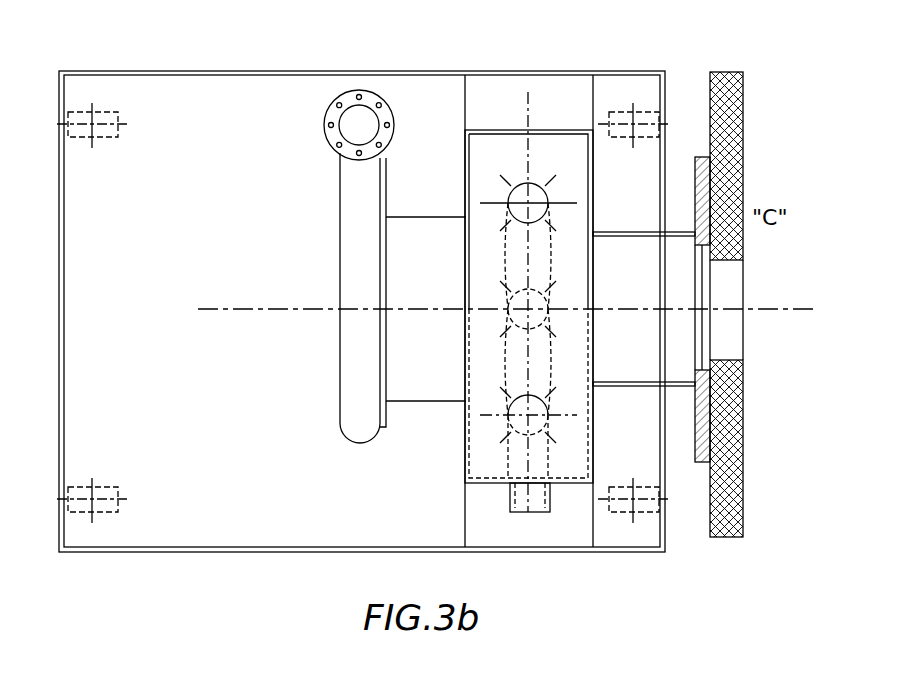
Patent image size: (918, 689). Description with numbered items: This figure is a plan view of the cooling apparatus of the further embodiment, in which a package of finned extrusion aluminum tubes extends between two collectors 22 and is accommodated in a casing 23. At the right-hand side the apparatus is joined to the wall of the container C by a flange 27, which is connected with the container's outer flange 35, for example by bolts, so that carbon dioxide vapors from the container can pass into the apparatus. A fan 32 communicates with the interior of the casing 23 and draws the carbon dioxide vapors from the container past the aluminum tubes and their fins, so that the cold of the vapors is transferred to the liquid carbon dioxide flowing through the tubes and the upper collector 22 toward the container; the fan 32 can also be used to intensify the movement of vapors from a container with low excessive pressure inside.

The collector 22 is at (518, 197).
The casing 23 is at (572, 460).
The flange 27 is at (700, 350).
The fan 32 is at (362, 185).
The outer flange 35 is at (708, 323).